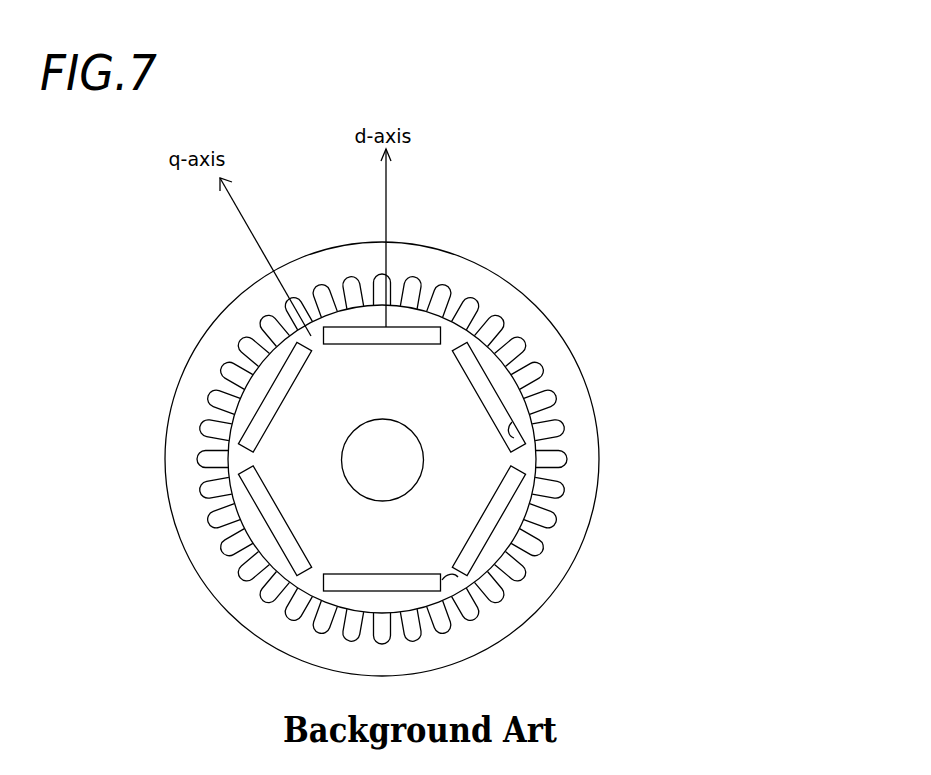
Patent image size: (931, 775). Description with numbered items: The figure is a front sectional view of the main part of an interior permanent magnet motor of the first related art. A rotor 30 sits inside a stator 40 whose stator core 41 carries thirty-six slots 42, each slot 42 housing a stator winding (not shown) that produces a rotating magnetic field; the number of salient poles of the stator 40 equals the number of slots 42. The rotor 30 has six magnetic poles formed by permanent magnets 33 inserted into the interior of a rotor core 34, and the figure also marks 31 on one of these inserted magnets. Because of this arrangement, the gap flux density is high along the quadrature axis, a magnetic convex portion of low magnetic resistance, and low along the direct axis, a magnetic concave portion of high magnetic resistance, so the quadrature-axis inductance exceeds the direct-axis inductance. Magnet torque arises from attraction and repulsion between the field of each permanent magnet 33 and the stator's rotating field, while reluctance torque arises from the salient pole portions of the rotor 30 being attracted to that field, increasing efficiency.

The rotor 30 is at (493, 486).
The permanent magnet 31 is at (483, 392).
The permanent magnet 33 is at (508, 427).
The rotor core 34 is at (448, 583).
The stator 40 is at (454, 420).
The stator core 41 is at (518, 312).
The slot 42 is at (518, 350).